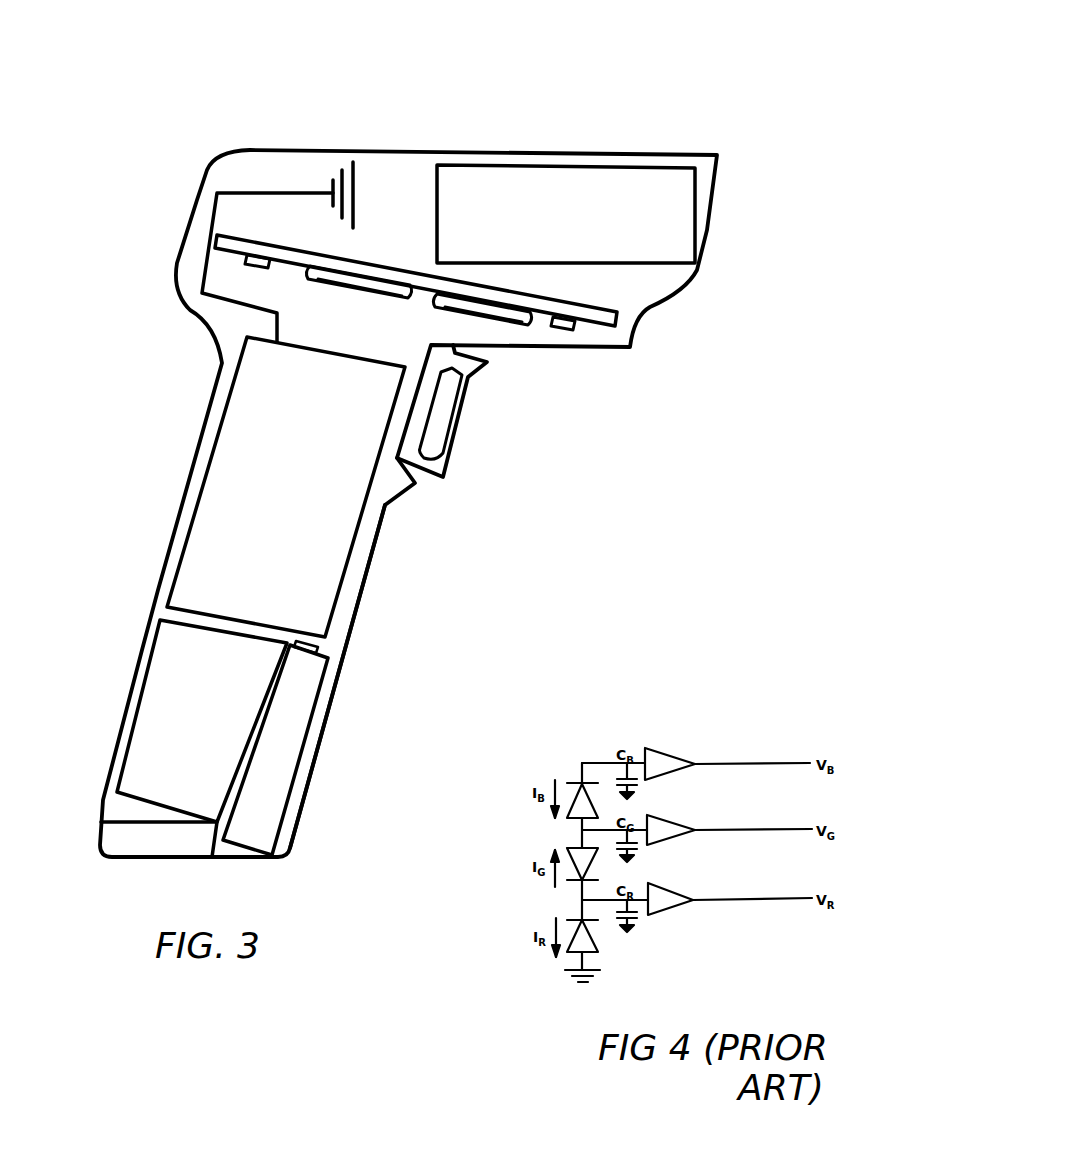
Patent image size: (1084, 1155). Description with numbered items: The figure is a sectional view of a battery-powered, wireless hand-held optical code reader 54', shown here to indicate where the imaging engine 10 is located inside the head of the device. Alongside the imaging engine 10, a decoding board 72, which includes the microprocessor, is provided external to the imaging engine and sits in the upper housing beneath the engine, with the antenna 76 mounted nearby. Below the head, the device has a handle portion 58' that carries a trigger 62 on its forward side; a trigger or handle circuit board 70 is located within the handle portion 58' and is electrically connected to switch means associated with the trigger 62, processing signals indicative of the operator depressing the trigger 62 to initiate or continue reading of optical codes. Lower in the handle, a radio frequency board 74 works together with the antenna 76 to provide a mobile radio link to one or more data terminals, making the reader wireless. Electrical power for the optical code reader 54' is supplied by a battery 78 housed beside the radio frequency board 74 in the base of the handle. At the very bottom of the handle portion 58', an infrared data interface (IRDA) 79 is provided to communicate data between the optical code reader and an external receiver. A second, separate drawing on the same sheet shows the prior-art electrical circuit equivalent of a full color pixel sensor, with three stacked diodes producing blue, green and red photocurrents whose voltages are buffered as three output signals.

The hand-held optical code reader 54' is at (408, 445).
The imaging engine 10 is at (648, 186).
The antenna 76 is at (307, 193).
The decoding board 72 is at (378, 262).
The trigger 62 is at (460, 433).
The trigger or handle circuit board 70 is at (340, 542).
The handle portion 58' is at (380, 676).
The radio frequency board 74 is at (160, 678).
The battery 78 is at (310, 693).
The infrared data interface (IRDA) 79 is at (107, 840).